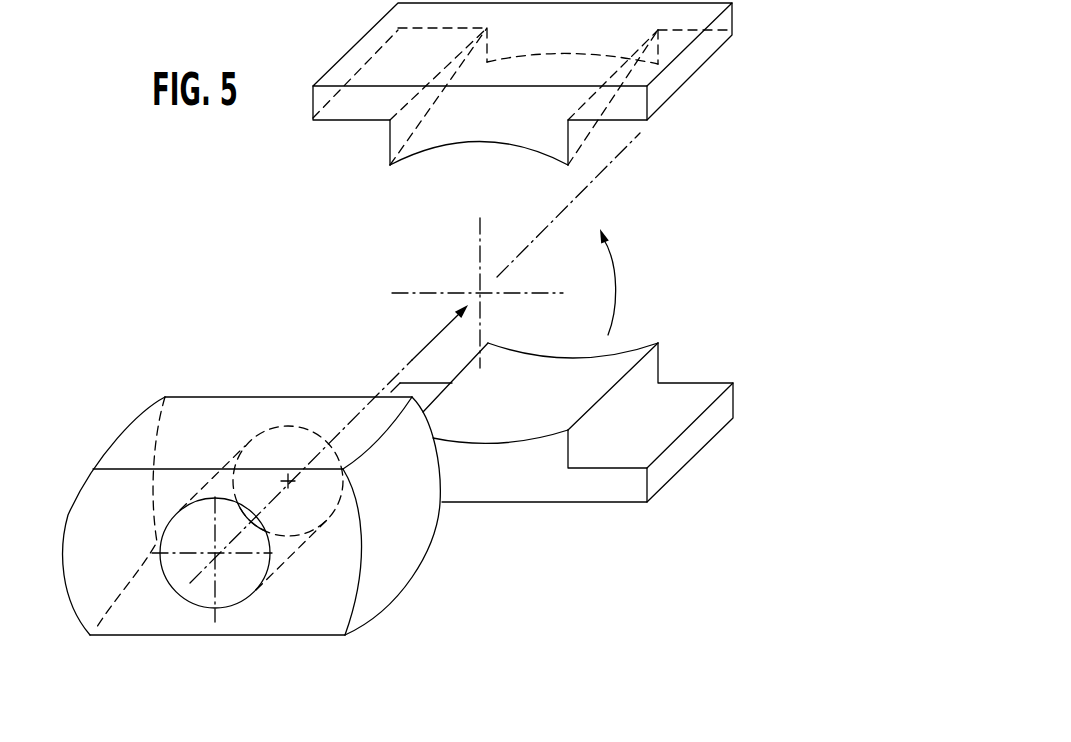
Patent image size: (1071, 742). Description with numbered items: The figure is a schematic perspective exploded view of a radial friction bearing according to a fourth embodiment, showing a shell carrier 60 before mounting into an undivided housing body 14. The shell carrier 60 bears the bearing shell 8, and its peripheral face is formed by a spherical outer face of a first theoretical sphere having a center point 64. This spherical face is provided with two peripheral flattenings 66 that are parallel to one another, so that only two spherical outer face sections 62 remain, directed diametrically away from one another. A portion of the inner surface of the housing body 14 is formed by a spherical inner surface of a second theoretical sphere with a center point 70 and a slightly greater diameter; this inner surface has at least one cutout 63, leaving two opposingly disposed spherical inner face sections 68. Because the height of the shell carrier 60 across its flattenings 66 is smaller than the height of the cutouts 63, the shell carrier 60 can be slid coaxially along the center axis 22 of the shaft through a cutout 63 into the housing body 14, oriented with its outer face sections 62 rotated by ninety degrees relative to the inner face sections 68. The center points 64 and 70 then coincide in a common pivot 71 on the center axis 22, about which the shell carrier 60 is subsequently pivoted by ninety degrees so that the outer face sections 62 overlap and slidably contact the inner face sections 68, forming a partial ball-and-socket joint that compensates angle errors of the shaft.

The bearing shell 8 is at (190, 583).
The housing body 14 is at (698, 53).
The center axis 22 is at (617, 157).
The shell carrier 60 is at (269, 497).
The spherical outer face sections 62 is at (95, 513).
The cutout 63 is at (650, 246).
The center point of the first theoretical sphere 64 is at (252, 513).
The peripheral flattenings 66 is at (215, 420).
The spherical inner face sections 68 is at (500, 113).
The center point of the second theoretical sphere 70 is at (480, 293).
The common pivot 71 is at (480, 293).